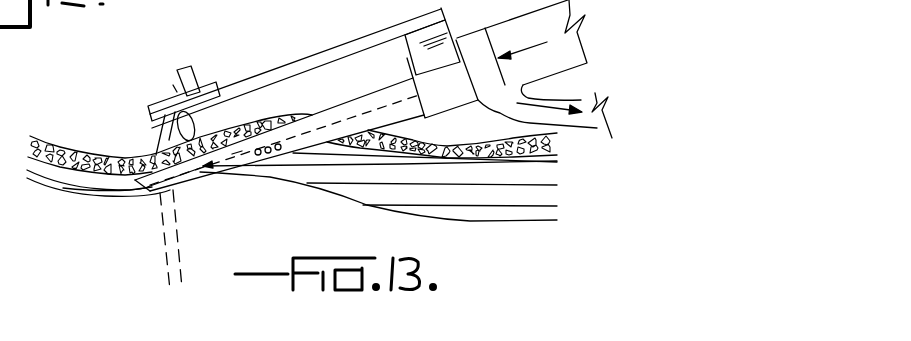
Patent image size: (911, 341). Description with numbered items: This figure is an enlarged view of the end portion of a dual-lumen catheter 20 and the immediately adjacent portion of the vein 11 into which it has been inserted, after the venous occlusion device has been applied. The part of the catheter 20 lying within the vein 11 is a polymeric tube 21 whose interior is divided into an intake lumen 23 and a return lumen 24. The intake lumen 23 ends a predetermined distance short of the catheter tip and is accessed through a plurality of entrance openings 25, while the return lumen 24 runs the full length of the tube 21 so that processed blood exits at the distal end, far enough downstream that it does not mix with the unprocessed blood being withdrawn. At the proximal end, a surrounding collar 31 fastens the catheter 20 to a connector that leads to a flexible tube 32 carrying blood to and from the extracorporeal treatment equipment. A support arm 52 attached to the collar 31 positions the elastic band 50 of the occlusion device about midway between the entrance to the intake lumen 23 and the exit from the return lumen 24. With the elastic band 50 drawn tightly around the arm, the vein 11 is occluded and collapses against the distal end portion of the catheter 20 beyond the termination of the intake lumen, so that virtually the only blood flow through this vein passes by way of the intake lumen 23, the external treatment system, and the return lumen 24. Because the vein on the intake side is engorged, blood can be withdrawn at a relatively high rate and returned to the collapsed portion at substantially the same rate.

The vein 11 is at (65, 194).
The dual-lumen catheter 20 is at (279, 144).
The polymeric tube 21 is at (330, 108).
The intake lumen 23 is at (297, 143).
The return lumen 24 is at (146, 191).
The entrance openings 25 is at (266, 146).
The collar 31 is at (450, 107).
The flexible tube 32 is at (580, 99).
The elastic band 50 is at (163, 226).
The support arm 52 is at (312, 57).